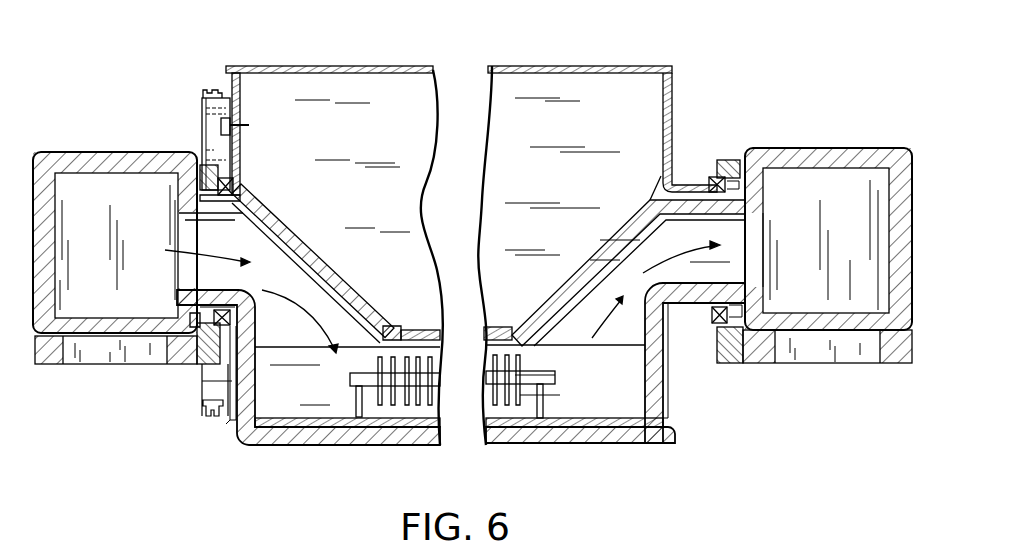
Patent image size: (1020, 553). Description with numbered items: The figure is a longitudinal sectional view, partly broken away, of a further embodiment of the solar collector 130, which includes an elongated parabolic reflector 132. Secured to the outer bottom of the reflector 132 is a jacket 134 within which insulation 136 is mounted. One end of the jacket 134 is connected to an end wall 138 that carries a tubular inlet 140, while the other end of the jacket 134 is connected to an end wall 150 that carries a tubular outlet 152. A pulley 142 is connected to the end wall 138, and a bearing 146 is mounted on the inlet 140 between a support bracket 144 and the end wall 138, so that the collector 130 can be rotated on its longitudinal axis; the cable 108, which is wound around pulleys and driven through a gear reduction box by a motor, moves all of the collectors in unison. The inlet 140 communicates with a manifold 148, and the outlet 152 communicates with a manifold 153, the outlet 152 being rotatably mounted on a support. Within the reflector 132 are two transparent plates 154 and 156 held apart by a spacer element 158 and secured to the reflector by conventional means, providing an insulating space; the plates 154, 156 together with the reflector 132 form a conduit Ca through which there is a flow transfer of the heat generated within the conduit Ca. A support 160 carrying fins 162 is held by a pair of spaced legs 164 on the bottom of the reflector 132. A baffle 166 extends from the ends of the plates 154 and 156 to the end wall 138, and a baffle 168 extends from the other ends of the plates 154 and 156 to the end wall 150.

The cable 108 is at (213, 92).
The pulley 142 is at (205, 97).
The support bracket 144 is at (210, 160).
The bearing 146 is at (242, 183).
The end wall 138 is at (239, 128).
The manifold 148 is at (72, 153).
The tubular inlet 140 is at (222, 205).
The baffle 166 is at (303, 250).
The spacer element 158 is at (392, 327).
The transparent plate 154 is at (425, 336).
The support 160 is at (546, 376).
The legs 164 is at (354, 397).
The conduit Ca is at (391, 432).
The elongated parabolic reflector 132 is at (600, 100).
The collector 130 is at (672, 95).
The tubular outlet 152 is at (700, 180).
The baffle 168 is at (585, 245).
The transparent plate 156 is at (492, 328).
The fins 162 is at (516, 347).
The end wall 150 is at (669, 362).
The insulation 136 is at (598, 430).
The jacket 134 is at (628, 447).
The manifold 153 is at (913, 310).